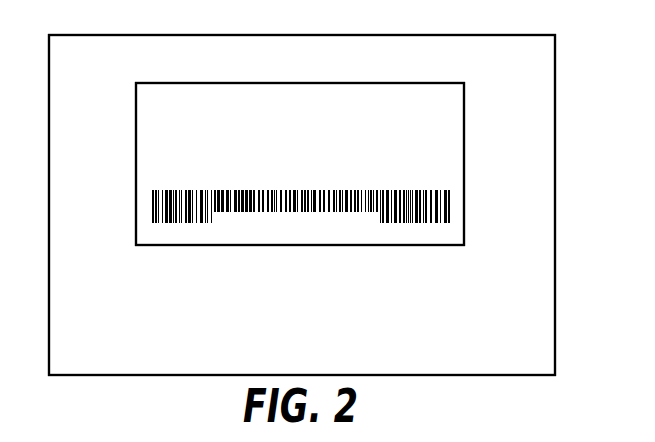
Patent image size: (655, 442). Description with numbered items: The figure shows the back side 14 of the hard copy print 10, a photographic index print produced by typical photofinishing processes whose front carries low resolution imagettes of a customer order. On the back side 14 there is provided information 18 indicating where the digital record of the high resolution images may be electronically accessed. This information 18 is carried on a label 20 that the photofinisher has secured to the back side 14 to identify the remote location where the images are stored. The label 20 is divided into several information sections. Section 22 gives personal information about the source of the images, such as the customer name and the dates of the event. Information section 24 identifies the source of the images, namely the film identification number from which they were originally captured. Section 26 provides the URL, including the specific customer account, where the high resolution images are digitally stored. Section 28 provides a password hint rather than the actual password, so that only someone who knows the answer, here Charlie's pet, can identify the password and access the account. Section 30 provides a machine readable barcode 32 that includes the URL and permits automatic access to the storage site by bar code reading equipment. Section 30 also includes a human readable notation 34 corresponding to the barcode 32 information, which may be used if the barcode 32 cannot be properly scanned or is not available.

The hard copy print 10 is at (559, 136).
The back side 14 is at (61, 184).
The information 18 is at (382, 109).
The label 20 is at (465, 131).
The information section 22 is at (134, 100).
The information section 24 is at (147, 143).
The information section 26 is at (150, 158).
The information section 28 is at (150, 176).
The information section 30 is at (151, 229).
The machine readable barcode 32 is at (440, 225).
The human readable notation 34 is at (288, 228).